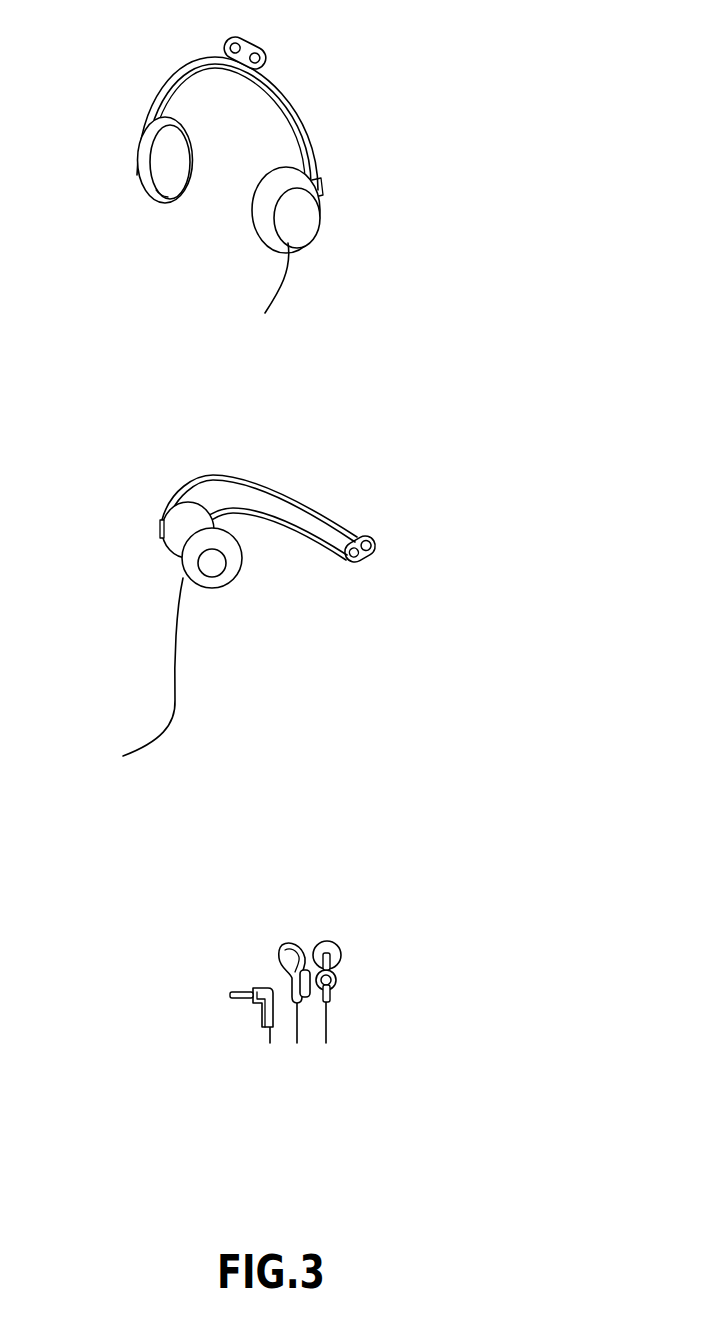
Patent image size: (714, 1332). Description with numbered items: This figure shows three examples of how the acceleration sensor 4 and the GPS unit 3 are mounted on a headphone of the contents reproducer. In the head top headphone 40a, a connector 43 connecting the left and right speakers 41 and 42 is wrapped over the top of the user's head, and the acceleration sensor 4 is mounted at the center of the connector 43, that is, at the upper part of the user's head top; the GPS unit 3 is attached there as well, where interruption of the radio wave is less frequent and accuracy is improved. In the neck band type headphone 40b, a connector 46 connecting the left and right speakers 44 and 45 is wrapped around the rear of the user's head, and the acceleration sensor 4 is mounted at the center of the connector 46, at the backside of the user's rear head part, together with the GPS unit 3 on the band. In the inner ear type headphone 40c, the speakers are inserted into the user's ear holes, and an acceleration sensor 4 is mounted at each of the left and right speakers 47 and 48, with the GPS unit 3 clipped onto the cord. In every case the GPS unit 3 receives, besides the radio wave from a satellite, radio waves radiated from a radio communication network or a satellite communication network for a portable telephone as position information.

The head top headphone 40a is at (437, 88).
The neck band type headphone 40b is at (432, 492).
The inner ear type headphone 40c is at (425, 942).
The left speaker 41 is at (152, 202).
The right speaker 42 is at (318, 218).
The connector 43 is at (297, 100).
The left speaker 44 is at (225, 577).
The right speaker 45 is at (158, 527).
The connector 46 is at (282, 500).
The left speaker 47 is at (333, 942).
The right speaker 48 is at (288, 945).
The GPS unit 3 is at (250, 42).
The acceleration sensor 4 is at (308, 1003).